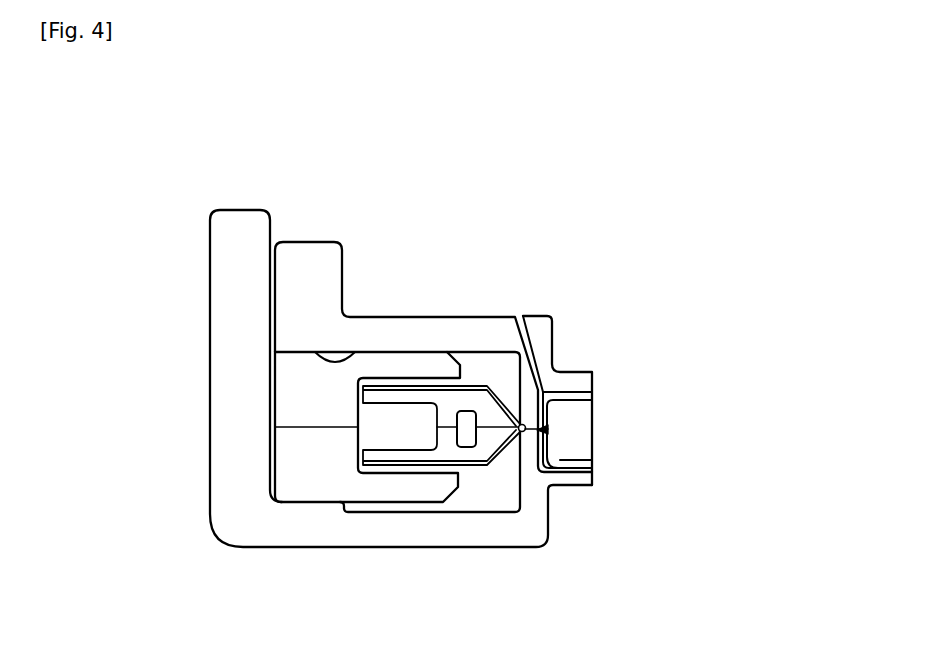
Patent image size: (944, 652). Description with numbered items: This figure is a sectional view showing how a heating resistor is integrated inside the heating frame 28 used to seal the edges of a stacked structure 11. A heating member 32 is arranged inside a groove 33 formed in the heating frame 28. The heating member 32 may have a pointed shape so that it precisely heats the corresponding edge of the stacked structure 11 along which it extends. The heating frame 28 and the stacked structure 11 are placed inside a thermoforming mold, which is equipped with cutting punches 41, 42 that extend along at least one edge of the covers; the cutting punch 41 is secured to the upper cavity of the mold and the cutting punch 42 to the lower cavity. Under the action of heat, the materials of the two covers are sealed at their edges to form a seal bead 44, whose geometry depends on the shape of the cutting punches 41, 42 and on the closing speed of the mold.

The stacked structure 11 is at (580, 421).
The heating frame 28 is at (298, 387).
The heating member 32 is at (465, 405).
The groove 33 is at (393, 378).
The cutting punch 41 is at (529, 408).
The cutting punch 42 is at (534, 478).
The seal bead 44 is at (550, 432).